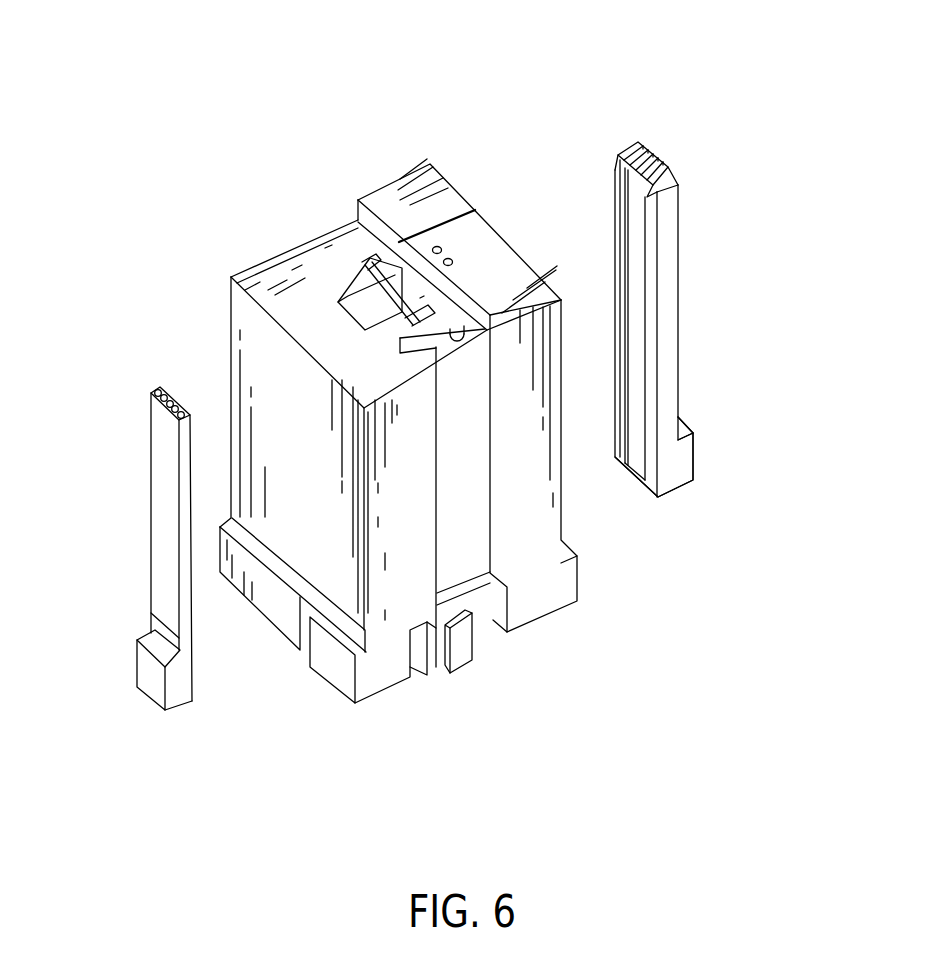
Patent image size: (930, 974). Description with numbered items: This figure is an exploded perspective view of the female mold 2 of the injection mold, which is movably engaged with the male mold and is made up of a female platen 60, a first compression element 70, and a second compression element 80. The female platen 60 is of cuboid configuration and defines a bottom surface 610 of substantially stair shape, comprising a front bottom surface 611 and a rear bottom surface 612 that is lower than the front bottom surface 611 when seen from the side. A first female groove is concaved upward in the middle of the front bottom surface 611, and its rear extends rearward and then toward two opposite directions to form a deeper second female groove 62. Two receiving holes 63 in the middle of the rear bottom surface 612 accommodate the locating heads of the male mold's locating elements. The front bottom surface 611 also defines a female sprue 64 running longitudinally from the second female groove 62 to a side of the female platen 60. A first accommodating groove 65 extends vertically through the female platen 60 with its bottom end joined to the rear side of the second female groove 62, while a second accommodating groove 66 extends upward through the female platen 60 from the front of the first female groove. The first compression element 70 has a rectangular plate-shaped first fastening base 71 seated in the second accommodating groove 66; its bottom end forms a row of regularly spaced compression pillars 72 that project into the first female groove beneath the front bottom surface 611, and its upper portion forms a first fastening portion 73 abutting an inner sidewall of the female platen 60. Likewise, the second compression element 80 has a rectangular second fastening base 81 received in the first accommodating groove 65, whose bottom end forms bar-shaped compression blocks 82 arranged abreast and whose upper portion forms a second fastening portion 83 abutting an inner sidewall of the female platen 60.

The female mold 2 is at (143, 52).
The female platen 60 is at (584, 604).
The bottom surface 610 is at (343, 110).
The front bottom surface 611 is at (357, 221).
The rear bottom surface 612 is at (427, 167).
The second female groove 62 is at (370, 266).
The receiving holes 63 is at (441, 249).
The female sprue 64 is at (460, 346).
The first accommodating groove 65 is at (420, 298).
The second accommodating groove 66 is at (350, 313).
The first compression element 70 is at (146, 564).
The first fastening base 71 is at (153, 487).
The compression pillars 72 is at (161, 392).
The first fastening portion 73 is at (144, 690).
The second compression element 80 is at (697, 341).
The second fastening base 81 is at (672, 273).
The compression blocks 82 is at (667, 170).
The second fastening portion 83 is at (690, 454).